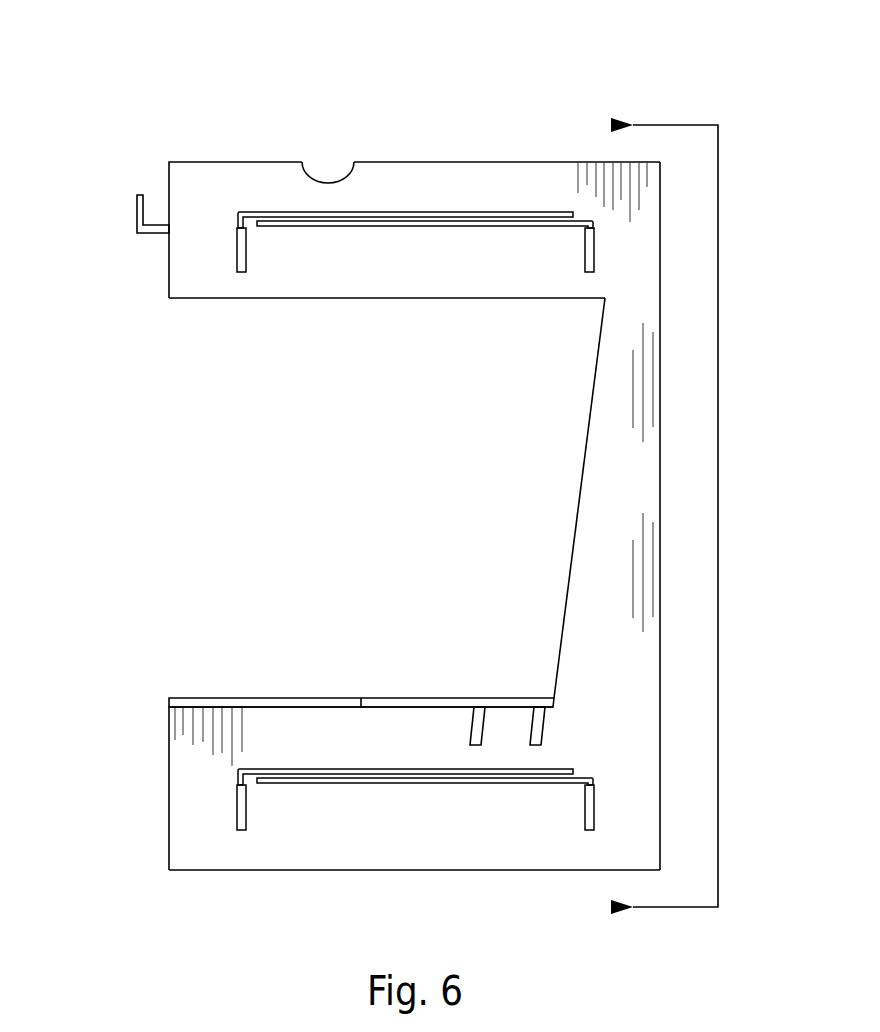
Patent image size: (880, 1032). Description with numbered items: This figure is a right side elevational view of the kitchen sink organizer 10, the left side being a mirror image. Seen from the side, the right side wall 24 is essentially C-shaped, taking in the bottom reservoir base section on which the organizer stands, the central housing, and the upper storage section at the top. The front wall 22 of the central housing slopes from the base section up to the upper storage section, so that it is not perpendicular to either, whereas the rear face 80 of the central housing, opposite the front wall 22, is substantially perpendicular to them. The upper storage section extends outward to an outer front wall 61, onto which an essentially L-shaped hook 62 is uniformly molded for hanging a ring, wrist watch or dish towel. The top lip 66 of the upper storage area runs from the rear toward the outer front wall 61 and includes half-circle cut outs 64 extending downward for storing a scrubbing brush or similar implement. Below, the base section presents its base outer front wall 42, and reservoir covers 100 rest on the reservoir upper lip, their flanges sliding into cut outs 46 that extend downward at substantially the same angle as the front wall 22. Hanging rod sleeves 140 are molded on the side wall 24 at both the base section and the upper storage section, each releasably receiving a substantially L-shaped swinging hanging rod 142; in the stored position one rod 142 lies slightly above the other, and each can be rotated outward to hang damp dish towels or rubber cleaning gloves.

The kitchen sink organizer 10 is at (256, 126).
The outer front wall 61 is at (150, 179).
The half-circle cut outs 64 is at (338, 153).
The top lip 66 is at (463, 161).
The L-shaped hook 62 is at (137, 215).
The swinging hanging rods 142 is at (347, 784).
The hanging rod sleeves 140 is at (538, 910).
The front wall 22 is at (552, 516).
The right side wall 24 is at (637, 500).
The rear face 80 is at (686, 510).
The reservoir covers 100 is at (400, 685).
The cut outs 46 is at (546, 727).
The base outer front wall 42 is at (152, 790).